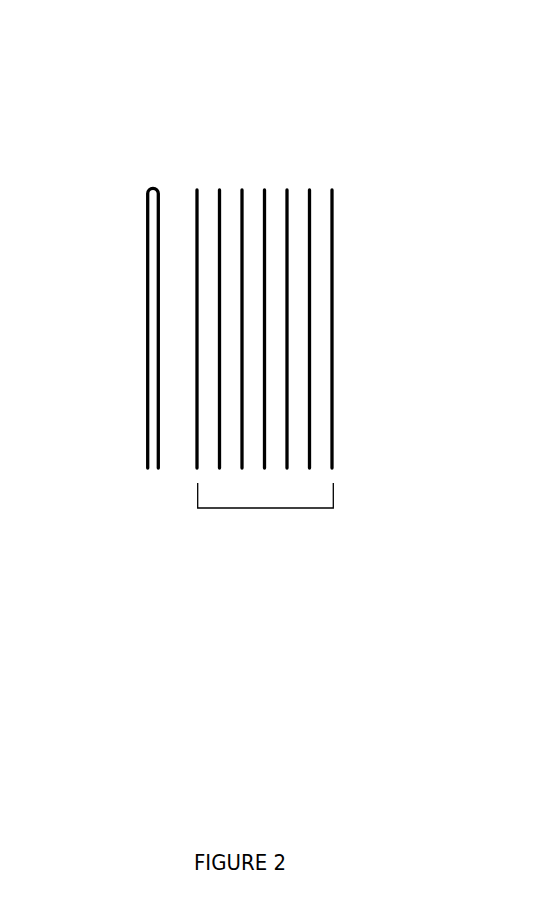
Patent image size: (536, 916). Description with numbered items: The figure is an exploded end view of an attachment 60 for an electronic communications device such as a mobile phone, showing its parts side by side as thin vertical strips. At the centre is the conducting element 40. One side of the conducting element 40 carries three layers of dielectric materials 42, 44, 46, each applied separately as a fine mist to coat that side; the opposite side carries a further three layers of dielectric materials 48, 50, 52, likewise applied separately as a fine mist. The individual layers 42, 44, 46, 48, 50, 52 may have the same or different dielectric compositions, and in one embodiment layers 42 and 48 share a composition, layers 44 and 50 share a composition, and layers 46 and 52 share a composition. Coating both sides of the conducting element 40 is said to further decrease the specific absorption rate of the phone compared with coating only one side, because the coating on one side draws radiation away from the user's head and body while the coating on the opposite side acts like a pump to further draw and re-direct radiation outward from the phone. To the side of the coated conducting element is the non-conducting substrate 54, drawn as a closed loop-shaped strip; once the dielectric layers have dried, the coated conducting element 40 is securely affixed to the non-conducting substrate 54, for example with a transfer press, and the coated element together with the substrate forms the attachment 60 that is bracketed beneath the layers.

The conducting element 40 is at (264, 160).
The dielectric material layer 42 is at (238, 160).
The dielectric material layer 44 is at (212, 157).
The dielectric material layer 46 is at (188, 159).
The dielectric material layer 48 is at (294, 164).
The dielectric material layer 50 is at (320, 163).
The dielectric material layer 52 is at (346, 166).
The non-conducting substrate 54 is at (130, 457).
The attachment 60 is at (267, 508).